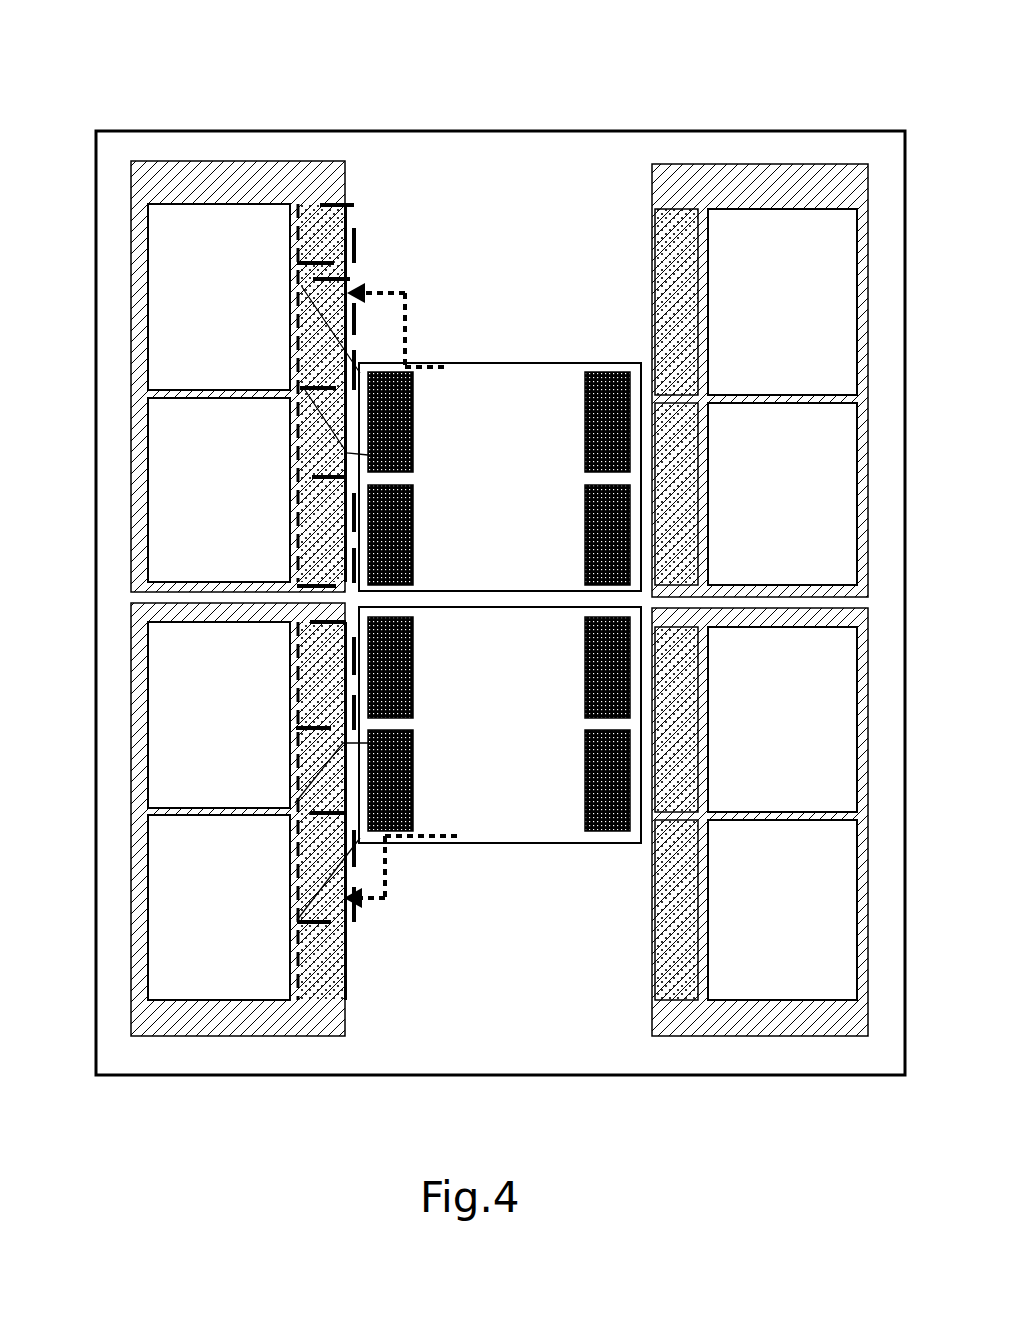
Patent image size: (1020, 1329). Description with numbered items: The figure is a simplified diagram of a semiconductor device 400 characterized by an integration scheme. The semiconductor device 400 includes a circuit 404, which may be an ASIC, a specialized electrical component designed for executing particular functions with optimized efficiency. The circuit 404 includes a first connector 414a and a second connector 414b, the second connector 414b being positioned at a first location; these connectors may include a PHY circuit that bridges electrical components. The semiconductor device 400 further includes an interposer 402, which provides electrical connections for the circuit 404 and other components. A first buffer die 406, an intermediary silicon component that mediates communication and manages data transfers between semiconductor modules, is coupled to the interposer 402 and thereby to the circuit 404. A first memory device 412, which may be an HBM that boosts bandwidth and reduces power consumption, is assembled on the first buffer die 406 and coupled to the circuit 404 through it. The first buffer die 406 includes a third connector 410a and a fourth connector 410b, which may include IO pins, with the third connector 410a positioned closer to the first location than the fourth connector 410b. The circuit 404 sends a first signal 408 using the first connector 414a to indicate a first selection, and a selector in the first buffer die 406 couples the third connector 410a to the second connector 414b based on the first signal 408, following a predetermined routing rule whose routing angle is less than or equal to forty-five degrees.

The semiconductor device 400 is at (676, 91).
The interposer 402 is at (540, 1030).
The circuit 404 is at (500, 438).
The first buffer die 406 is at (265, 376).
The first signal 408 is at (405, 332).
The third connector 410a is at (331, 298).
The fourth connector 410b is at (327, 225).
The first memory device 412 is at (182, 302).
The first connector 414a is at (440, 368).
The second connector 414b is at (407, 440).